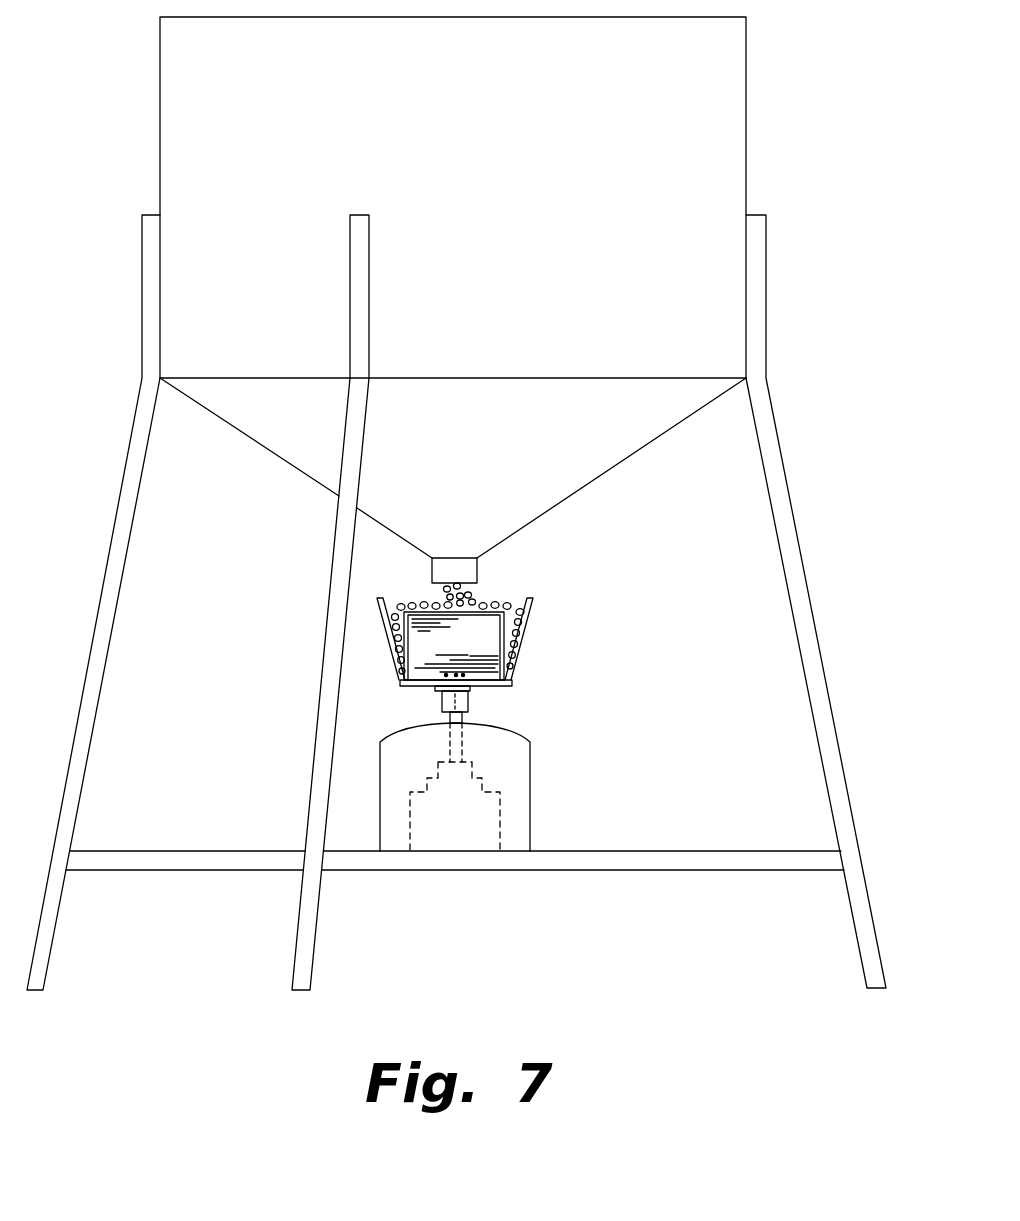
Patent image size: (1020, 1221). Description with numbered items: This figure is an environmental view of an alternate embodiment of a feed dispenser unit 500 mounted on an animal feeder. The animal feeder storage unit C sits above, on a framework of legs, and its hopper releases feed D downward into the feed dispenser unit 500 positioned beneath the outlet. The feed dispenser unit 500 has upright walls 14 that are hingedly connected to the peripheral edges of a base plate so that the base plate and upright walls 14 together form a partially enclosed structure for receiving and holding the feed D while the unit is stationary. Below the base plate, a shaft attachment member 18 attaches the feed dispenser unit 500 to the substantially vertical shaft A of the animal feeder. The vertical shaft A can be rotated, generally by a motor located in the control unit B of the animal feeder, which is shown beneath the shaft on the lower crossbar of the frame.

The upright walls 14 is at (392, 629).
The shaft attachment member 18 is at (442, 700).
The feed dispenser unit 500 is at (605, 582).
The vertical shaft A is at (462, 742).
The control unit B is at (500, 824).
The animal feeder storage unit C is at (160, 135).
The feed D is at (445, 598).